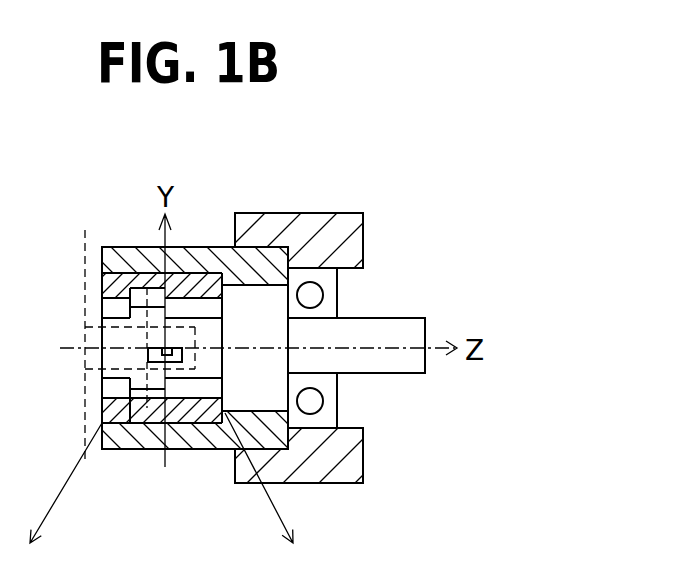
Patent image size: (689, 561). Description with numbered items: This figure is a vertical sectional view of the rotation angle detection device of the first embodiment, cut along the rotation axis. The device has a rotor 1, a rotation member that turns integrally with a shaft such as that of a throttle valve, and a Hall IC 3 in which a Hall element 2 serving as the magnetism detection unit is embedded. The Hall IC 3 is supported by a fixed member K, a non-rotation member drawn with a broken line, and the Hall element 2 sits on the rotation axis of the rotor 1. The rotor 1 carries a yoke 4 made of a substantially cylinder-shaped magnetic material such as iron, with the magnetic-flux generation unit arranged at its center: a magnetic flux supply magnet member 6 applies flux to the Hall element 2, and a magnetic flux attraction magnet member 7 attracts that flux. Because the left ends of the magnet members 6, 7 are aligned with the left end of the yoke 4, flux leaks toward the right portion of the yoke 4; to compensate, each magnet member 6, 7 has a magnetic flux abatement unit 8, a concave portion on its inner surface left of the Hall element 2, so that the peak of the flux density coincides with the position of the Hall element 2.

The rotor 1 is at (106, 231).
The Hall element 2 is at (167, 348).
The Hall IC 3 is at (168, 364).
The yoke 4 is at (252, 265).
The magnetic flux supply magnet member 6 is at (110, 287).
The magnetic flux attraction magnet member 7 is at (106, 398).
The magnetic flux abatement unit 8 is at (138, 298).
The fixed member K is at (195, 327).